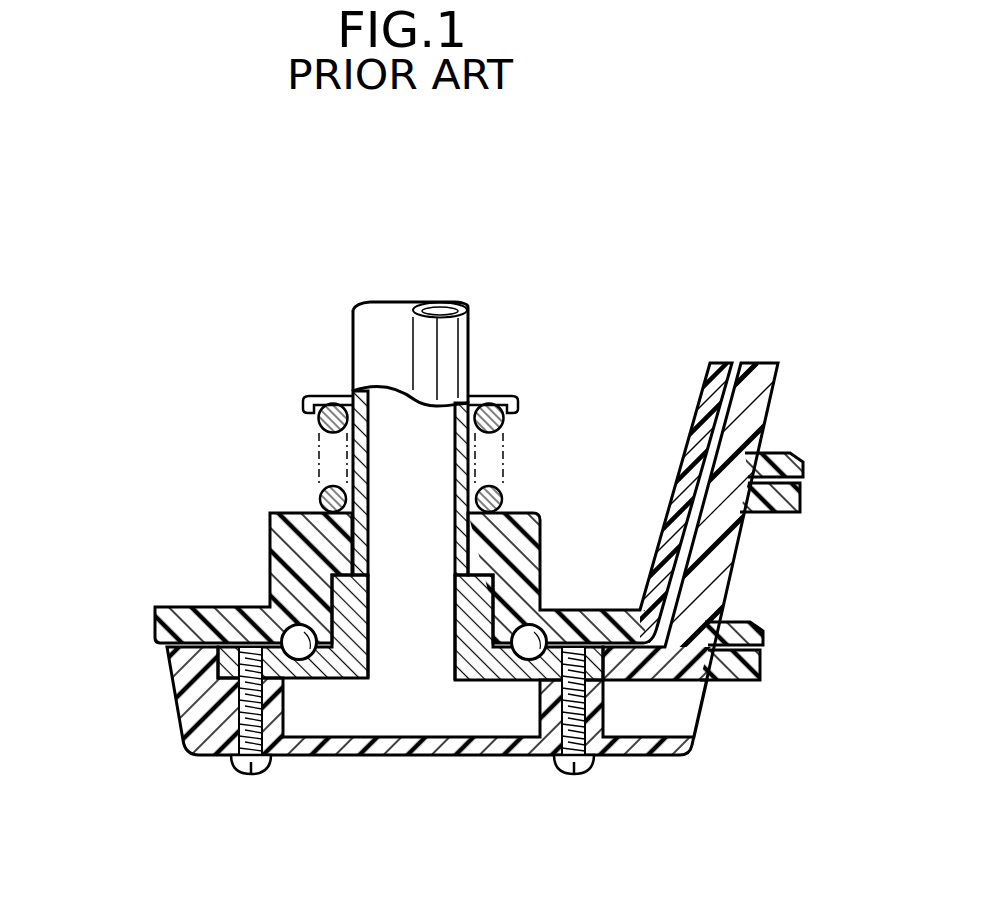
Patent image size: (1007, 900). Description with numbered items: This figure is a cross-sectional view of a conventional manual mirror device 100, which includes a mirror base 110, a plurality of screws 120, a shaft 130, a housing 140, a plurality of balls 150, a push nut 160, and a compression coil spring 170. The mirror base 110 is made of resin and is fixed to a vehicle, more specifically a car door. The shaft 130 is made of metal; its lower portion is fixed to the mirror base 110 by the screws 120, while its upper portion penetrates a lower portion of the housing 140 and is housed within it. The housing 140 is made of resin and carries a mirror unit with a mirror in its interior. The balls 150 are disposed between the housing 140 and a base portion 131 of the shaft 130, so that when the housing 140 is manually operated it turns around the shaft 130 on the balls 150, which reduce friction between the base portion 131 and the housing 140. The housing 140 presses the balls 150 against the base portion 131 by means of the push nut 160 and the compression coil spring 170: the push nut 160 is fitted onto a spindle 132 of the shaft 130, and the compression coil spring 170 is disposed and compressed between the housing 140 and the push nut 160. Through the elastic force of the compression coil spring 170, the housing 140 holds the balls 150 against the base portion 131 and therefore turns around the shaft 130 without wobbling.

The manual mirror device 100 is at (593, 268).
The mirror base 110 is at (173, 730).
The screws 120 is at (250, 775).
The shaft 130 is at (488, 357).
The base portion 131 is at (495, 683).
The spindle 132 is at (368, 460).
The housing 140 is at (270, 558).
The balls 150 is at (550, 615).
The push nut 160 is at (332, 395).
The compression coil spring 170 is at (313, 418).